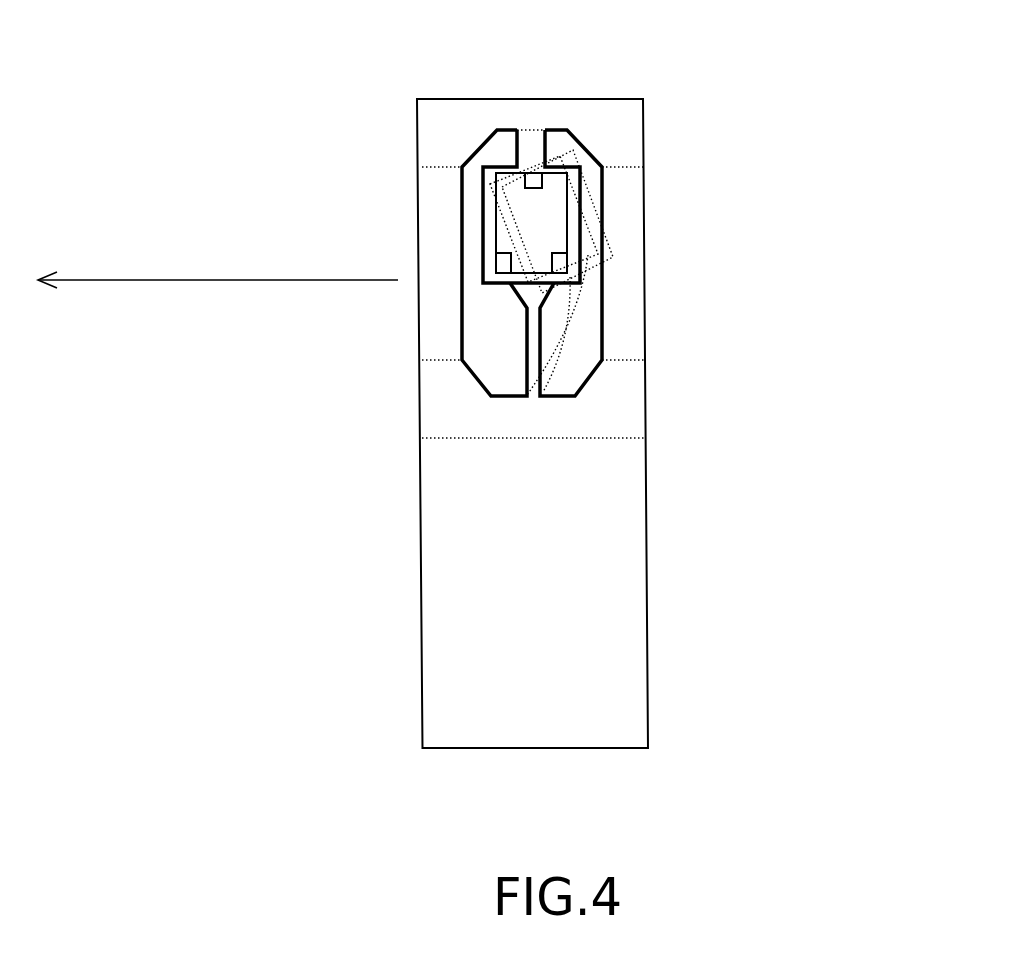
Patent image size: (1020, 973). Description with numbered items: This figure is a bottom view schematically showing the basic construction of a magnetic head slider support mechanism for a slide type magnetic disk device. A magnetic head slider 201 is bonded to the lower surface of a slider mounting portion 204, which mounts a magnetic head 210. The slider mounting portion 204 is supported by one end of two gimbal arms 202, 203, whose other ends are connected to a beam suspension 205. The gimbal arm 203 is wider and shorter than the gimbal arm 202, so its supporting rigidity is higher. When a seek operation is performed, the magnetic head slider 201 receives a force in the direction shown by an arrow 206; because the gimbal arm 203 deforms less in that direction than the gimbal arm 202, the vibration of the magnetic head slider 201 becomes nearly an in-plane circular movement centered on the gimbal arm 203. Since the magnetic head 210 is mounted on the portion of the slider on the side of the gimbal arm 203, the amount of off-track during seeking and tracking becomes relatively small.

The magnetic head slider 201 is at (538, 229).
The gimbal arm 202 is at (532, 342).
The gimbal arm 203 is at (538, 149).
The slider mounting portion 204 is at (487, 202).
The beam suspension 205 is at (533, 555).
The arrow 206 is at (195, 278).
The magnetic head 210 is at (537, 173).